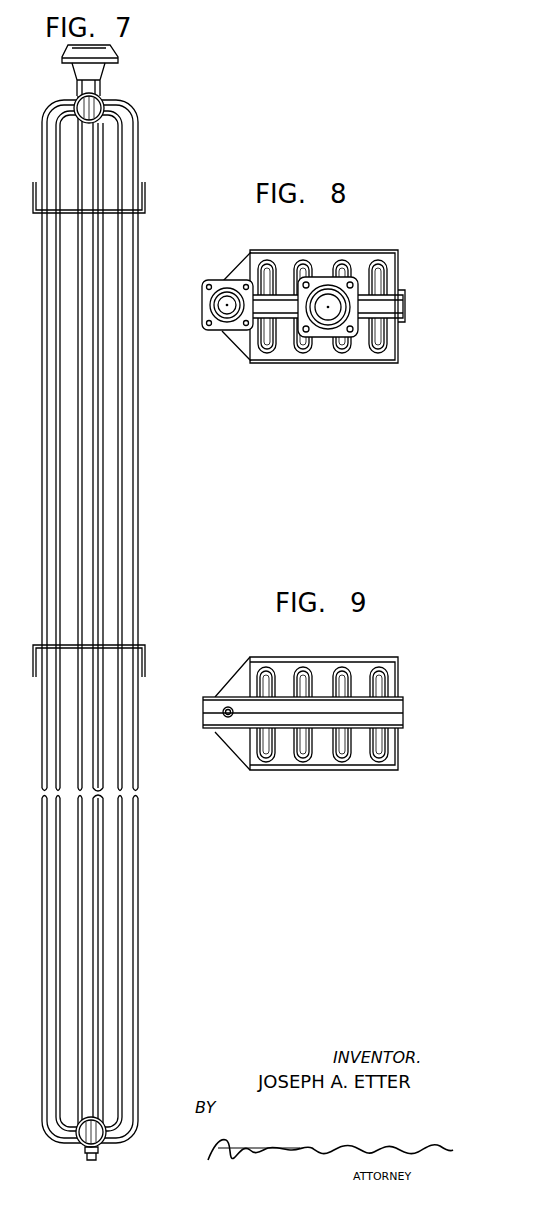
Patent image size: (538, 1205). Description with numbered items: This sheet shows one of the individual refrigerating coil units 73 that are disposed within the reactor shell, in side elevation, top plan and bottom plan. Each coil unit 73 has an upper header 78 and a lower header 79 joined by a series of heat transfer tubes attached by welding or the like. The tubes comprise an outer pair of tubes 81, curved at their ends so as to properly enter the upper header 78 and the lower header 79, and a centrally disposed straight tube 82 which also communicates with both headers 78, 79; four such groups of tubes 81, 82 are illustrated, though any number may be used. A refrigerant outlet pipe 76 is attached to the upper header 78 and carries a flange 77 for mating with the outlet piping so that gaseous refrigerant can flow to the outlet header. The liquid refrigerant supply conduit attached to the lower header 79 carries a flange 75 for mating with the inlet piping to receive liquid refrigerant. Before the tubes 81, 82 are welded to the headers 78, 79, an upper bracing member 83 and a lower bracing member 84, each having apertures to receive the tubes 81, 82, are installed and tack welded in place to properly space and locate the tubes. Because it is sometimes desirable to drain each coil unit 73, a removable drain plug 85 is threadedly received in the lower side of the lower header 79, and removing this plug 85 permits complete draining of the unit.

In FIG. 7, the coil unit 73 is at (98, 619).
In FIG. 8, the coil unit 73 is at (314, 303).
In FIG. 9, the coil unit 73 is at (317, 716).
In FIG. 8, the flange 75 is at (203, 315).
In FIG. 7, the refrigerant outlet pipe 76 is at (103, 100).
In FIG. 7, the flange 77 is at (118, 58).
In FIG. 8, the flange 77 is at (323, 278).
In FIG. 7, the upper header 78 is at (78, 100).
In FIG. 8, the upper header 78 is at (405, 307).
In FIG. 7, the lower header 79 is at (105, 1138).
In FIG. 9, the lower header 79 is at (403, 712).
In FIG. 7, the outer pair of tubes 81 is at (47, 968).
In FIG. 8, the outer pair of tubes 81 is at (267, 262).
In FIG. 9, the outer pair of tubes 81 is at (267, 668).
In FIG. 7, the straight tube 82 is at (90, 1012).
In FIG. 7, the upper bracing member 83 is at (145, 197).
In FIG. 8, the upper bracing member 83 is at (331, 363).
In FIG. 7, the lower bracing member 84 is at (145, 662).
In FIG. 9, the lower bracing member 84 is at (351, 770).
In FIG. 7, the drain plug 85 is at (87, 1156).
In FIG. 9, the drain plug 85 is at (225, 708).